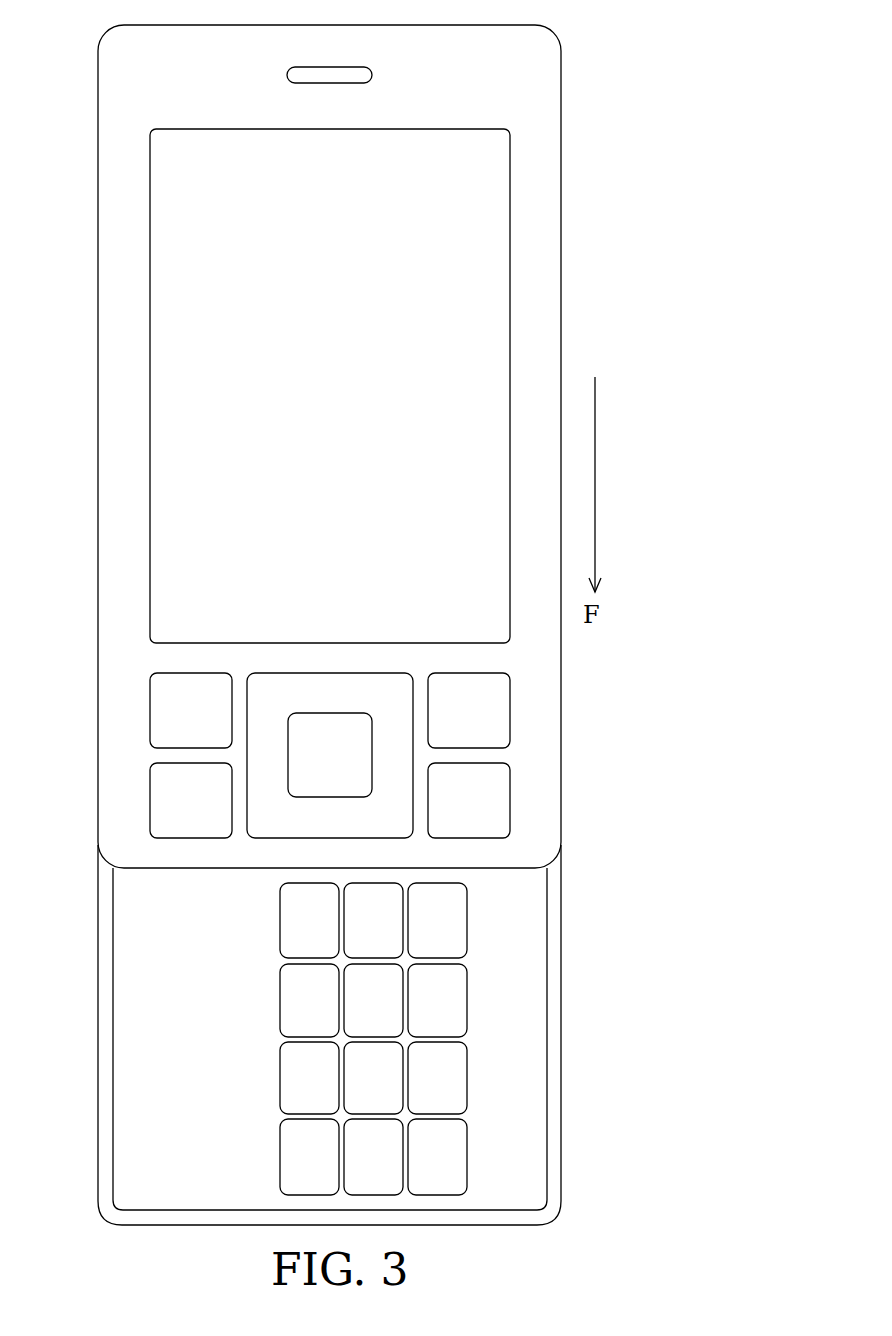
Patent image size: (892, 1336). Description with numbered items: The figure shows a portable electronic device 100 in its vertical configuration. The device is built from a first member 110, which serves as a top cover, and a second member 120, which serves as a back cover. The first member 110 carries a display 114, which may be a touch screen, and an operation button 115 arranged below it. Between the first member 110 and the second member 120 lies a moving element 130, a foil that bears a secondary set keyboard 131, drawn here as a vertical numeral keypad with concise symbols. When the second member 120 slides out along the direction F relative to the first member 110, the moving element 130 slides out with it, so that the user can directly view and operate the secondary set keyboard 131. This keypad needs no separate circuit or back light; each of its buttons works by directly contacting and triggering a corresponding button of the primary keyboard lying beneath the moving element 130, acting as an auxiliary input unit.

The portable electronic device 100 is at (634, 72).
The first member 110 is at (561, 57).
The display 114 is at (150, 349).
The operation button 115 is at (150, 712).
The second member 120 is at (562, 892).
The moving element 130 is at (530, 1012).
The secondary set keyboard 131 is at (467, 987).